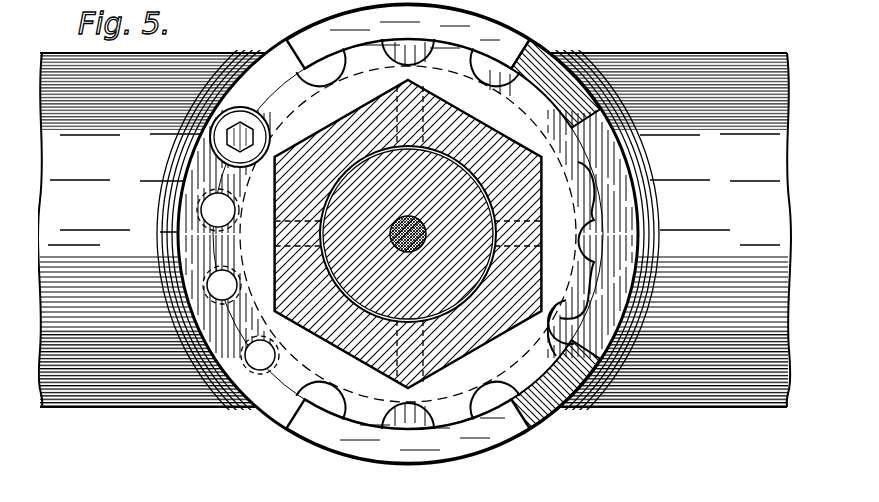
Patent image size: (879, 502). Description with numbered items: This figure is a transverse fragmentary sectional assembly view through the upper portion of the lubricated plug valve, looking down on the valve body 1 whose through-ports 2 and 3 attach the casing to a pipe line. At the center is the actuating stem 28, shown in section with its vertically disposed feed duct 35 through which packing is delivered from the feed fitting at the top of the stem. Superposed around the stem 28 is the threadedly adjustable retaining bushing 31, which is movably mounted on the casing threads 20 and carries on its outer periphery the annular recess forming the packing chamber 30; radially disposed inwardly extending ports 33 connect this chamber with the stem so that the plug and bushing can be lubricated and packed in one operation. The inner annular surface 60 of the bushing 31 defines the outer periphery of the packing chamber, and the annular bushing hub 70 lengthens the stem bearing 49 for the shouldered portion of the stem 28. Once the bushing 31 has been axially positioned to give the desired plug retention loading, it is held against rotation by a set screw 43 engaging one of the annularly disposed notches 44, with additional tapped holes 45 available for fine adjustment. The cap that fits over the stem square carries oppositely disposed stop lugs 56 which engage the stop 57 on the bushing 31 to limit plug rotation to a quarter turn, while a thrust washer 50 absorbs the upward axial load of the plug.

The valve body 1 is at (627, 418).
The through-port 2 is at (770, 262).
The through-port 3 is at (52, 212).
The casing threads 20 is at (409, 234).
The stem 28 is at (360, 156).
The packing chamber 30 is at (448, 78).
The retaining bushing 31 is at (360, 70).
The inwardly extending ports 33 is at (418, 128).
The feed duct 35 is at (406, 216).
The set screw 43 is at (214, 130).
The notches 44 is at (252, 118).
The tapped holes 45 is at (202, 208).
The stem bearing 49 is at (360, 290).
The thrust washer 50 is at (474, 74).
The stop lugs 56 is at (500, 28).
The stop 57 is at (578, 60).
The annular surface 60 is at (476, 272).
The bushing hub 70 is at (556, 318).